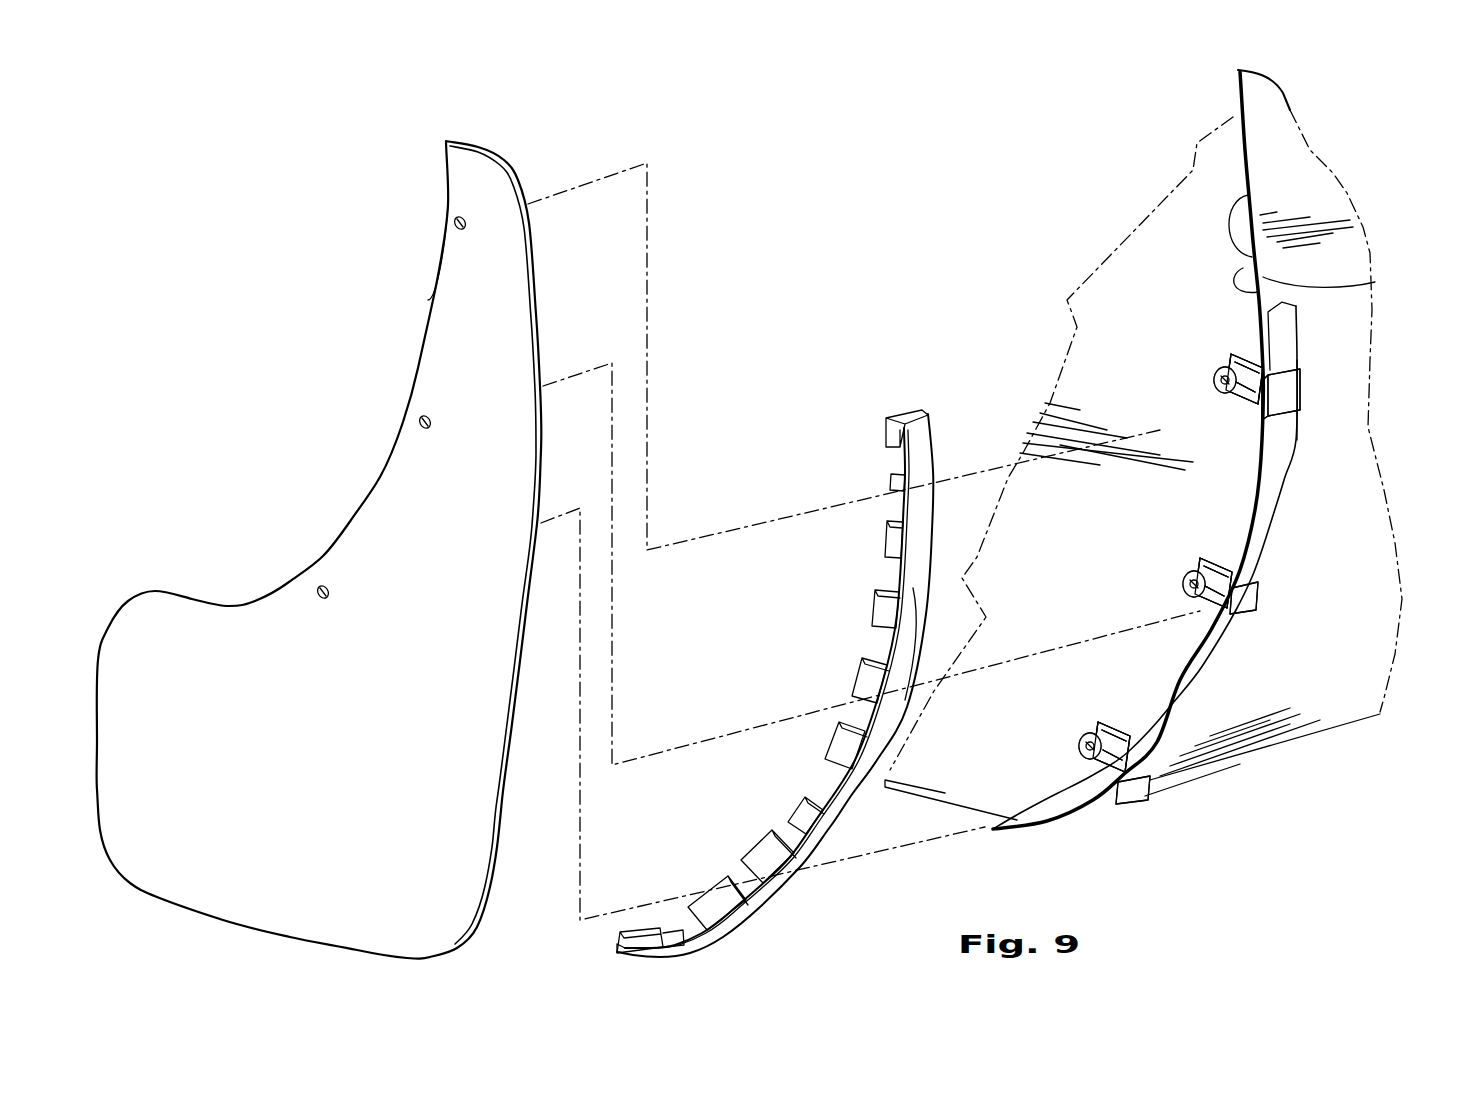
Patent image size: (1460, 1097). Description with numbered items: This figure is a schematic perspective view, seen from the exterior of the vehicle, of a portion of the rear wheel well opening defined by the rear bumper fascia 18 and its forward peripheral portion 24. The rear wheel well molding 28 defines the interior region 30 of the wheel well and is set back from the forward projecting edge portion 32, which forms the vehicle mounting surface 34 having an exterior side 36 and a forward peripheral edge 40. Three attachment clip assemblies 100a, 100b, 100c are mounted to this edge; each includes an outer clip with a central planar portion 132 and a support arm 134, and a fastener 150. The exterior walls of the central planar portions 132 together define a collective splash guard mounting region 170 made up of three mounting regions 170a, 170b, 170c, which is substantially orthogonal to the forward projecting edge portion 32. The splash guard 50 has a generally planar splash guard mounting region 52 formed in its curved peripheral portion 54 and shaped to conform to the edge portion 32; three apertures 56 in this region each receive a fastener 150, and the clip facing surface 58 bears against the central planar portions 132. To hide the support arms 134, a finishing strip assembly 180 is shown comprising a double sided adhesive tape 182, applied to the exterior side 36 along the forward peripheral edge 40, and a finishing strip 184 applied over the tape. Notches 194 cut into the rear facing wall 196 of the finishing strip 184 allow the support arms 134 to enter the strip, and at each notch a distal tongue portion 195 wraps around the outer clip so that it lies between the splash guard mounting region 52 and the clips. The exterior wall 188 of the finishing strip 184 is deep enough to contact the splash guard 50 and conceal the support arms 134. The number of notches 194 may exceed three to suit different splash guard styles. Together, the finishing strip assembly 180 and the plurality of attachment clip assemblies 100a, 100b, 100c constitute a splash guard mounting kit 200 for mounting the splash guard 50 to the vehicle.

The rear bumper fascia 18 is at (1284, 680).
The forward peripheral portion 24 is at (1229, 727).
The rear wheel well molding 28 is at (1045, 437).
The interior region 30 is at (933, 778).
The forward projecting edge portion 32 is at (1305, 526).
The vehicle mounting surface 34 is at (1375, 282).
The exterior side 36 is at (1307, 377).
The forward peripheral edge 40 is at (1255, 197).
The splash guard 50 is at (539, 350).
The splash guard mounting region 52 is at (422, 350).
The curved peripheral portion 54 is at (430, 297).
The apertures 56 is at (453, 226).
The clip facing surface 58 is at (479, 142).
The attachment clip assembly 100a is at (1201, 362).
The attachment clip assembly 100b is at (1163, 578).
The attachment clip assembly 100c is at (1059, 756).
The central planar portion 132 is at (1252, 370).
The support arm 134 is at (1282, 392).
The fastener 150 is at (1217, 372).
The collective splash guard mounting region 170 is at (1183, 474).
The mounting region 170a is at (1245, 400).
The mounting region 170b is at (1205, 560).
The mounting region 170c is at (1113, 724).
The finishing strip assembly 180 is at (905, 330).
The double sided adhesive tape 182 is at (1287, 462).
The finishing strip 184 is at (940, 447).
The exterior wall 188 is at (913, 588).
The notches 194 is at (874, 590).
The distal tongue portion 195 is at (886, 538).
The rear facing wall 196 is at (707, 922).
The splash guard mounting kit 200 is at (922, 385).